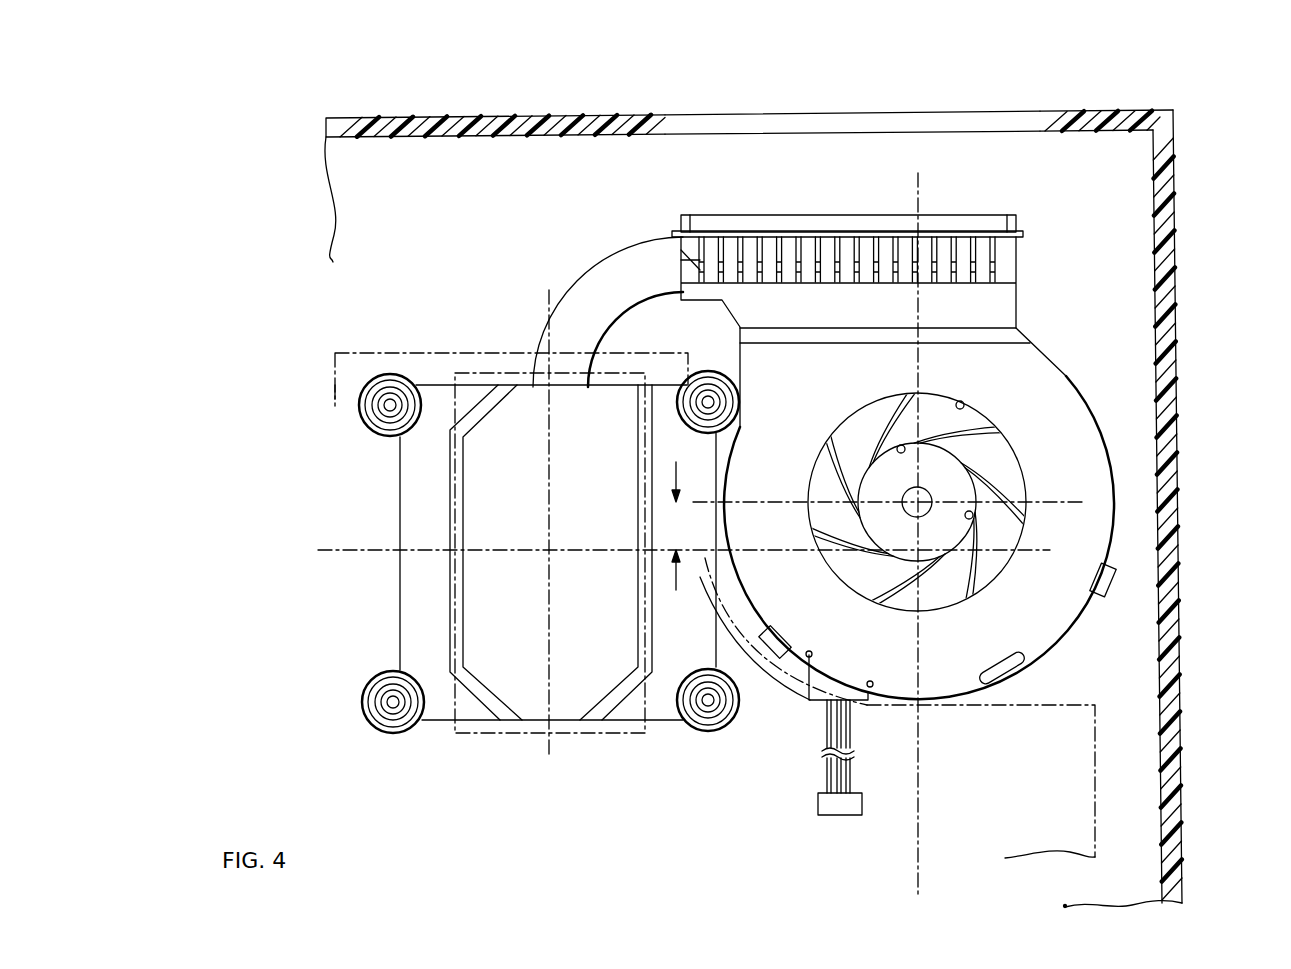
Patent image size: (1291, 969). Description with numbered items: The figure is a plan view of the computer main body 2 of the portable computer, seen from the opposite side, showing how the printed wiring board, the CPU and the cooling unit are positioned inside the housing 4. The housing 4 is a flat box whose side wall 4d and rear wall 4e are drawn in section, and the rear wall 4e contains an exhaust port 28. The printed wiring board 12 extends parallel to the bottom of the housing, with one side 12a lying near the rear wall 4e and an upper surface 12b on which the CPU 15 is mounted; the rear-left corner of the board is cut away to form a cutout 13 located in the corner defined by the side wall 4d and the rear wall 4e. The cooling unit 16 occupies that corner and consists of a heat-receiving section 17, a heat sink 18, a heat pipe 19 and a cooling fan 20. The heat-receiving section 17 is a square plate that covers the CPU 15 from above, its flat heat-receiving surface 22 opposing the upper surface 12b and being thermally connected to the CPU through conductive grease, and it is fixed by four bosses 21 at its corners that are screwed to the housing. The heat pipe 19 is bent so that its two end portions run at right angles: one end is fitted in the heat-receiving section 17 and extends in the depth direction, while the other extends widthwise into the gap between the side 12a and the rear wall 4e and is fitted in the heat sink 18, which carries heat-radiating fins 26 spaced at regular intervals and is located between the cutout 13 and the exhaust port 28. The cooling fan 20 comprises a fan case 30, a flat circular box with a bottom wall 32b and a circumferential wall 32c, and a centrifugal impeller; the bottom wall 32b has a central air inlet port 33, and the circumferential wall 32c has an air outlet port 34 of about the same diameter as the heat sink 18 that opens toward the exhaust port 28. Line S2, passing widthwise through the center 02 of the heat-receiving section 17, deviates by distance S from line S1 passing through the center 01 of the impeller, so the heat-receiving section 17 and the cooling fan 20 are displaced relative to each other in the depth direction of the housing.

The computer main body 2 is at (1186, 853).
The housing 4 is at (783, 483).
The side wall 4d is at (1170, 554).
The rear wall 4e is at (470, 118).
The printed wiring board 12 is at (1085, 785).
The side 12a is at (440, 350).
The upper surface 12b is at (347, 385).
The cutout 13 is at (772, 678).
The CPU 15 is at (612, 735).
The cooling unit 16 is at (1062, 232).
The heat-receiving section 17 is at (400, 634).
The heat sink 18 is at (1016, 300).
The heat pipe 19 is at (598, 282).
The cooling fan 20 is at (931, 567).
The bosses 21 is at (390, 406).
The heat-receiving surface 22 is at (482, 585).
The heat-radiating fins 26 is at (988, 262).
The exhaust port 28 is at (822, 125).
The fan case 30 is at (1093, 430).
The bottom wall 32b is at (957, 682).
The circumferential wall 32c is at (1070, 622).
The air inlet port 33 is at (962, 404).
The air outlet port 34 is at (875, 345).
The distance S is at (667, 526).
The line S1 is at (770, 500).
The line S2 is at (352, 548).
The center 01 is at (925, 510).
The center 02 is at (552, 558).